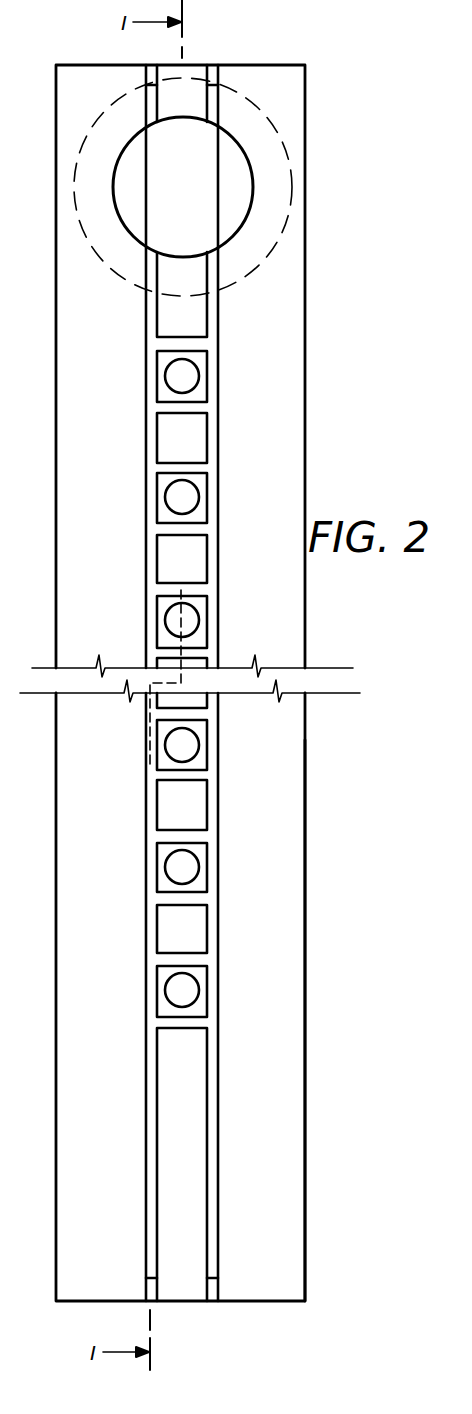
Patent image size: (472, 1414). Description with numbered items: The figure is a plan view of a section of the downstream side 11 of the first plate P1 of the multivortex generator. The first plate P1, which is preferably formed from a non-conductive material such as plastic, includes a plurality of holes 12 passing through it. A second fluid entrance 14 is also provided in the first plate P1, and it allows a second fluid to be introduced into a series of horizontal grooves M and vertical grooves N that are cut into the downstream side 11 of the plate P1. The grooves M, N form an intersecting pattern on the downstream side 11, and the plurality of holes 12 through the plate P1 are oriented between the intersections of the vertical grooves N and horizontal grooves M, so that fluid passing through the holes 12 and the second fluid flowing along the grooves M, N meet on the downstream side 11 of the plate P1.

The second fluid entrance 14 is at (198, 192).
The holes 12 is at (184, 362).
The horizontal grooves M is at (192, 537).
The vertical grooves N is at (146, 806).
The first plate P1 is at (312, 422).
The downstream side 11 is at (294, 811).